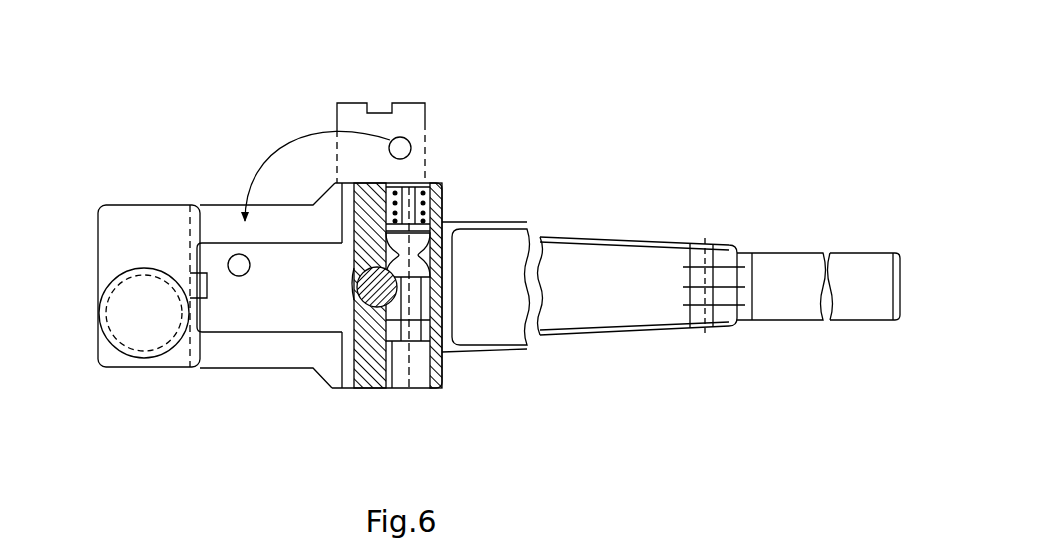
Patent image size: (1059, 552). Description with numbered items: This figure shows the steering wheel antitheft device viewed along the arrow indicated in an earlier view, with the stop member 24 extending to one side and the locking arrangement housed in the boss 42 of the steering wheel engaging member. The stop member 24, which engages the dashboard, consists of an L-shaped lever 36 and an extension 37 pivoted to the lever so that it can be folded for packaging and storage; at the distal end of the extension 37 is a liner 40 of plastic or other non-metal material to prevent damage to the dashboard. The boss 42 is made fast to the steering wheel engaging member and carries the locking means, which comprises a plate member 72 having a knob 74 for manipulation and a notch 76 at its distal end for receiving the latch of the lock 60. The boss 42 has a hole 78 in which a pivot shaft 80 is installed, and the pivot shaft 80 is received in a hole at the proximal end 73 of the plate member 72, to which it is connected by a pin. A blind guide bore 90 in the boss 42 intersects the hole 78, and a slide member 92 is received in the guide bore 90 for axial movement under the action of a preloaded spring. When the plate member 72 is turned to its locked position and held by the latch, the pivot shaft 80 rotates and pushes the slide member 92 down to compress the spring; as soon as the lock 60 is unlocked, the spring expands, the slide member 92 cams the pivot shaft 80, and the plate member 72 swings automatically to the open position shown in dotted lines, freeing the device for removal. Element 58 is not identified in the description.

The stop member 24 is at (577, 234).
The L-shaped lever 36 is at (559, 295).
The extension 37 is at (803, 300).
The liner 40 is at (897, 253).
The boss 42 is at (367, 391).
The body 58 is at (266, 334).
The lock 60 is at (97, 278).
The plate member 72 is at (270, 299).
The proximal end 73 is at (351, 283).
The knob 74 is at (237, 276).
The notch 76 is at (392, 105).
The hole 78 is at (368, 307).
The pivot shaft 80 is at (387, 306).
The guide bore 90 is at (425, 183).
The slide member 92 is at (427, 277).